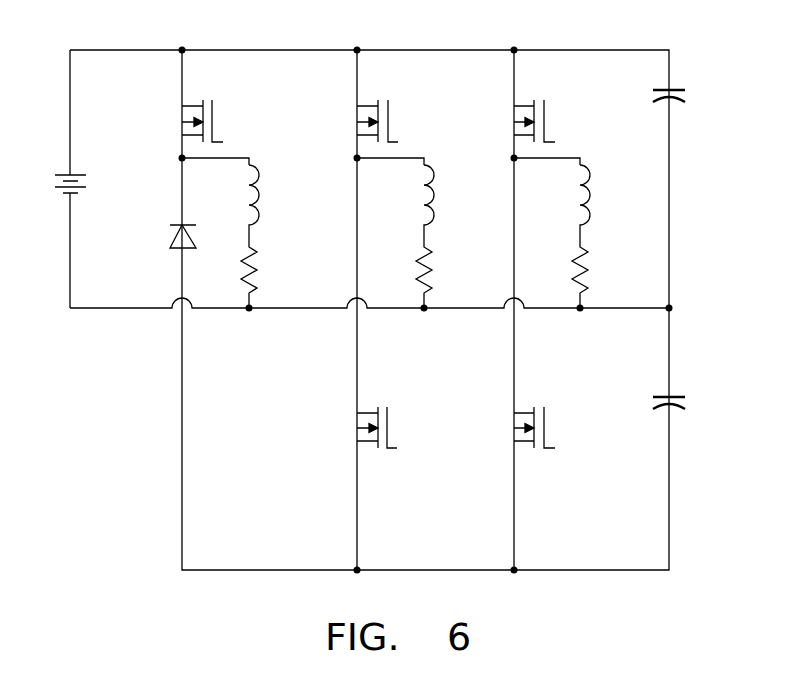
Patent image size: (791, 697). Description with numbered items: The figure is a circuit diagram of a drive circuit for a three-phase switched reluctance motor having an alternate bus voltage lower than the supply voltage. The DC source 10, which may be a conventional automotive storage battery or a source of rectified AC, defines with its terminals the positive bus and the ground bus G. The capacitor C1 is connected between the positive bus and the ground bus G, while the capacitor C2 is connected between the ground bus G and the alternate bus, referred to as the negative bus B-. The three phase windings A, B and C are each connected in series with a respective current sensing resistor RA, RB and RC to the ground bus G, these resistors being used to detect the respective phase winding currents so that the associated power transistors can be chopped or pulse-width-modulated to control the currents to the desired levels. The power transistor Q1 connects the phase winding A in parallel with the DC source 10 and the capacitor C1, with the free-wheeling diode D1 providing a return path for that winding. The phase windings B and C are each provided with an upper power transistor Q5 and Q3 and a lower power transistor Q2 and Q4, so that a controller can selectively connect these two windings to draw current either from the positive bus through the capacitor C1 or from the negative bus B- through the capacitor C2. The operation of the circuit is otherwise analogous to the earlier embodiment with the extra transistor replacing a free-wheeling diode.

The DC source 10 is at (63, 173).
The power transistor Q1 is at (193, 104).
The power transistor Q2 is at (365, 444).
The power transistor Q3 is at (526, 104).
The power transistor Q4 is at (522, 444).
The power transistor Q5 is at (368, 104).
The free-wheeling diode D1 is at (171, 240).
The phase winding A is at (258, 200).
The phase winding B is at (433, 200).
The phase winding C is at (590, 200).
The current sensing resistor RA is at (257, 264).
The current sensing resistor RB is at (432, 265).
The current sensing resistor RC is at (588, 265).
The capacitor C1 is at (677, 91).
The capacitor C2 is at (677, 397).
The negative bus B- is at (388, 570).
The ground bus G is at (390, 311).